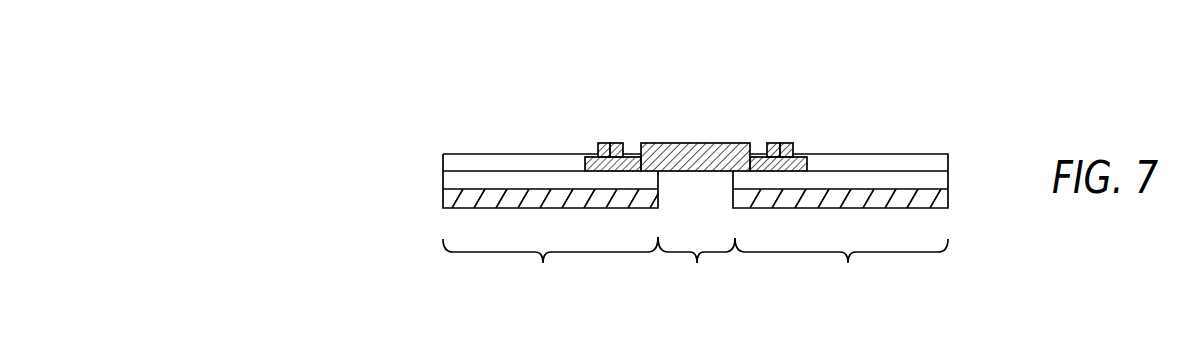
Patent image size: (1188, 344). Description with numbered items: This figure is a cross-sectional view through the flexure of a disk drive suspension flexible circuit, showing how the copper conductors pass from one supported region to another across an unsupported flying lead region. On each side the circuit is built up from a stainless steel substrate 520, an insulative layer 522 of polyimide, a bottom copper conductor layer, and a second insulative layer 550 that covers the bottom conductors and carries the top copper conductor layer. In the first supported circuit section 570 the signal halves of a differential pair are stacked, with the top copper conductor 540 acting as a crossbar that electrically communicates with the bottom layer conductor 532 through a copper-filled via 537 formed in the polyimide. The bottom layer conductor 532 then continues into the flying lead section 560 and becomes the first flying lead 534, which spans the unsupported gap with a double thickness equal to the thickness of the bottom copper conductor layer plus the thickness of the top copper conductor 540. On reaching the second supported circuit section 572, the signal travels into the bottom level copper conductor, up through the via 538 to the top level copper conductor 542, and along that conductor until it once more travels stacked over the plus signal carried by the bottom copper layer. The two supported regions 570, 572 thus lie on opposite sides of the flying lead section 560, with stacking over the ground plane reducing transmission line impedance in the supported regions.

The stainless steel substrate 520 is at (940, 202).
The insulative layer 522 is at (942, 178).
The second insulative layer 550 is at (925, 155).
The bottom layer conductor 532 is at (803, 167).
The first flying lead 534 is at (693, 142).
The via 537 is at (780, 142).
The via 538 is at (610, 143).
The top copper conductor 540 is at (778, 142).
The top level copper conductor 542 is at (617, 142).
The flying lead section 560 is at (696, 267).
The first supported circuit section 570 is at (840, 225).
The second supported circuit section 572 is at (550, 225).